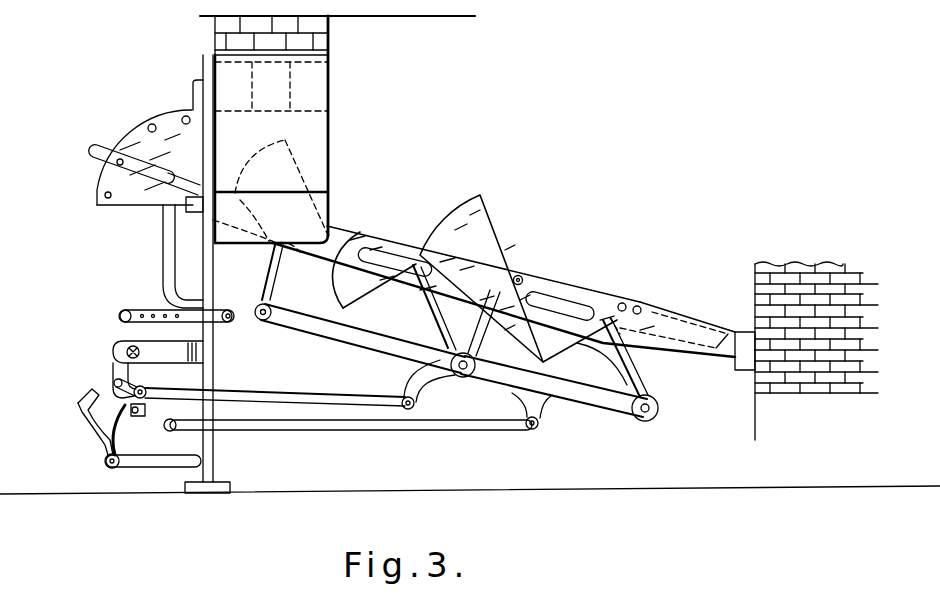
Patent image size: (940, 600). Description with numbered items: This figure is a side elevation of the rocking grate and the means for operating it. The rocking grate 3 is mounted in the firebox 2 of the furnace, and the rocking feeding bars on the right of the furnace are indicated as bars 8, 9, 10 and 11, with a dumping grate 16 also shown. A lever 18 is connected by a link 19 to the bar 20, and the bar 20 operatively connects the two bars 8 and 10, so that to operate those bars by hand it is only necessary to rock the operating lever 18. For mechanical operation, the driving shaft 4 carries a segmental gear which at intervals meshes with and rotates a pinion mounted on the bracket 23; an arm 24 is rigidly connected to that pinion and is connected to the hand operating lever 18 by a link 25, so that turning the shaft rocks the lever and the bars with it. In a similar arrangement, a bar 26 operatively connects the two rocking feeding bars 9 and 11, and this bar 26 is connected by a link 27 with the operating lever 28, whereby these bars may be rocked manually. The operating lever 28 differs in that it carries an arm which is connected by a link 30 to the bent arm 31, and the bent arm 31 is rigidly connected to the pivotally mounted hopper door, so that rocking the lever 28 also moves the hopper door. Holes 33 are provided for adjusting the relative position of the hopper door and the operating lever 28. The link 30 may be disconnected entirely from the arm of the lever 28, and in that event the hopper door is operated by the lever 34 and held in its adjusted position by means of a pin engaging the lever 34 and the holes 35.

The firebox 2 is at (483, 270).
The rocking grate 3 is at (524, 280).
The driving shaft 4 is at (126, 351).
The rocking feeding bar 8 is at (282, 168).
The rocking feeding bar 9 is at (360, 237).
The rocking feeding bar 10 is at (481, 222).
The rocking feeding bar 11 is at (567, 305).
The dumping grate 16 is at (683, 318).
The lever 18 is at (95, 421).
The link 19 is at (288, 395).
The bar 20 is at (372, 345).
The bracket 23 is at (113, 365).
The arm 24 is at (130, 384).
The link 25 is at (145, 409).
The bar 26 is at (593, 405).
The link 27 is at (428, 423).
The operating lever 28 is at (137, 431).
The link 30 is at (176, 311).
The bent arm 31 is at (170, 240).
The holes 33 is at (152, 311).
The lever 34 is at (107, 158).
The holes 35 is at (183, 117).